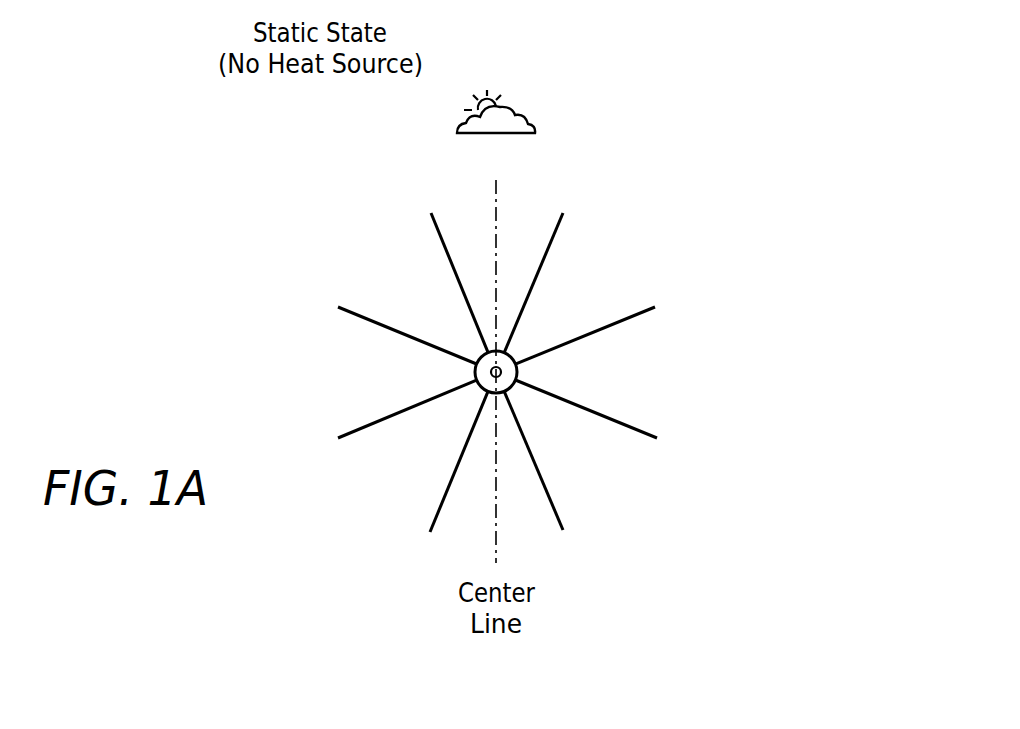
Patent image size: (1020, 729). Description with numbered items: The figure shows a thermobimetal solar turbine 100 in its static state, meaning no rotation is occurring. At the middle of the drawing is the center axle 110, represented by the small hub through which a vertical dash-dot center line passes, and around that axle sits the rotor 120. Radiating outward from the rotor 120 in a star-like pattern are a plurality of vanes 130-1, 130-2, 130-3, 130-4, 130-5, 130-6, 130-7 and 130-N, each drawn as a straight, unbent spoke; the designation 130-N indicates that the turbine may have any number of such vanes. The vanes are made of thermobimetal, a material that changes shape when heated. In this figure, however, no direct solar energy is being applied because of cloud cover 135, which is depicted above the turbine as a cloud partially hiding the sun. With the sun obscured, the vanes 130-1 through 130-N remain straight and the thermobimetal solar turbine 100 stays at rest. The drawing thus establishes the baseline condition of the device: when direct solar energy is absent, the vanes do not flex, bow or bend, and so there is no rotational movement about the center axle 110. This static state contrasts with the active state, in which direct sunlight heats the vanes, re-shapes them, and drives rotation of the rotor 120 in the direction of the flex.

The thermobimetal solar turbine 100 is at (223, 243).
The center axle 110 is at (510, 372).
The rotor 120 is at (466, 372).
The vane 130-1 is at (543, 272).
The vane 130-2 is at (435, 235).
The vane 130-3 is at (377, 332).
The vane 130-4 is at (373, 430).
The vane 130-5 is at (460, 485).
The vane 130-6 is at (547, 470).
The vane 130-7 is at (597, 418).
The vane 130-N is at (608, 333).
The cloud cover 135 is at (523, 110).